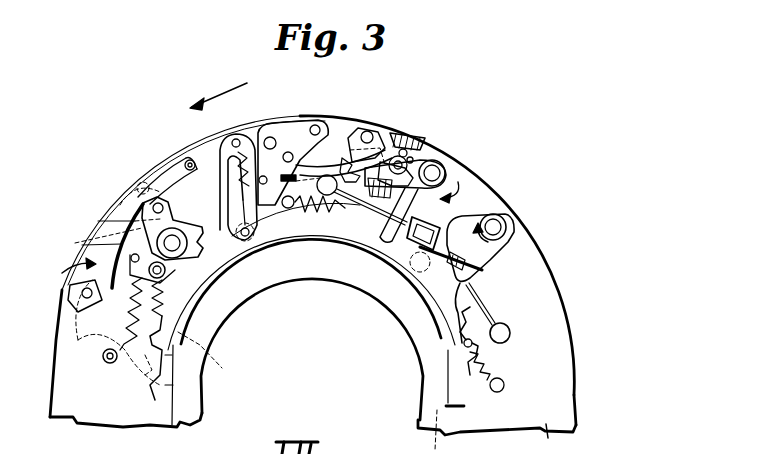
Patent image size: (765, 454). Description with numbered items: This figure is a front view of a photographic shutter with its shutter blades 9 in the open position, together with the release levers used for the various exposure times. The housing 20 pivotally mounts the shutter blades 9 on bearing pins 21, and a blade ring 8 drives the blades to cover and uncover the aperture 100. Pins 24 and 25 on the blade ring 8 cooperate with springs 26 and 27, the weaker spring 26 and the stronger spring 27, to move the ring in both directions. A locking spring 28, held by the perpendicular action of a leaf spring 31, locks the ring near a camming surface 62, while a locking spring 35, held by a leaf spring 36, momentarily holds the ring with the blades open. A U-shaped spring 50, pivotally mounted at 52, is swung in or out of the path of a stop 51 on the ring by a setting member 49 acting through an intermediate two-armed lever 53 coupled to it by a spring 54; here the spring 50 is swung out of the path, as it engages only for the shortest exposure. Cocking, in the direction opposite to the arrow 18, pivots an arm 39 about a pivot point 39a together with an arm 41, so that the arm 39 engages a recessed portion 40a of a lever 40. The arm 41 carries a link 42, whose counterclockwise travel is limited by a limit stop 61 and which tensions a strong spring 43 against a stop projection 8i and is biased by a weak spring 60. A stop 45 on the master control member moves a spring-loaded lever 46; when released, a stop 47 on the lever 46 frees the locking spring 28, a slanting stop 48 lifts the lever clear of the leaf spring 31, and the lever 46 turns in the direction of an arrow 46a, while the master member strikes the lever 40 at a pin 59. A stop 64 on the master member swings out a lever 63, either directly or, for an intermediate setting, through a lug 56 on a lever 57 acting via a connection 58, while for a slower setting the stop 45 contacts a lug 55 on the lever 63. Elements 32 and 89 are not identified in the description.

The arrow 18 is at (218, 88).
The housing 20 is at (313, 285).
The bearing pins 21 is at (433, 432).
The aperture 100 is at (321, 359).
The lever 40 is at (124, 212).
The recessed portion 40a is at (133, 200).
The limit stop 61 is at (142, 184).
The arm 41 is at (117, 226).
The link 42 is at (89, 252).
The pivot point 39a is at (162, 255).
The U-shaped spring 50 is at (213, 152).
The pin 59 is at (186, 161).
The spring 54 is at (236, 133).
The intermediate two-armed lever 53 is at (278, 123).
The lug 55 is at (305, 122).
The lever 63 is at (338, 150).
The lug 56 is at (366, 130).
The lever 57 is at (397, 133).
The connection 58 is at (410, 150).
The setting member 49 is at (418, 150).
The pivot 52 is at (290, 214).
The spring 27 is at (306, 232).
The locking spring 35 is at (331, 237).
The pin 25 is at (347, 252).
The stop 45 is at (363, 272).
The stop 47 is at (395, 282).
The slanting stop 48 is at (410, 300).
The stop 51 is at (258, 258).
The arm 39 is at (232, 272).
The spring 43 is at (210, 302).
The shutter blades 9 is at (200, 356).
The stop 64 is at (447, 165).
The leaf spring 36 is at (415, 203).
The spring-loaded lever 46 is at (480, 238).
The block 32 is at (428, 244).
The arrow 46a is at (488, 258).
The leaf spring 31 is at (478, 278).
The pin 89 is at (478, 303).
The locking spring 28 is at (500, 323).
The camming surface 62 is at (465, 305).
The pin 24 is at (464, 344).
The spring 26 is at (492, 370).
The stop projection 8i is at (115, 320).
The blade ring 8 is at (156, 398).
The spring 60 is at (109, 332).